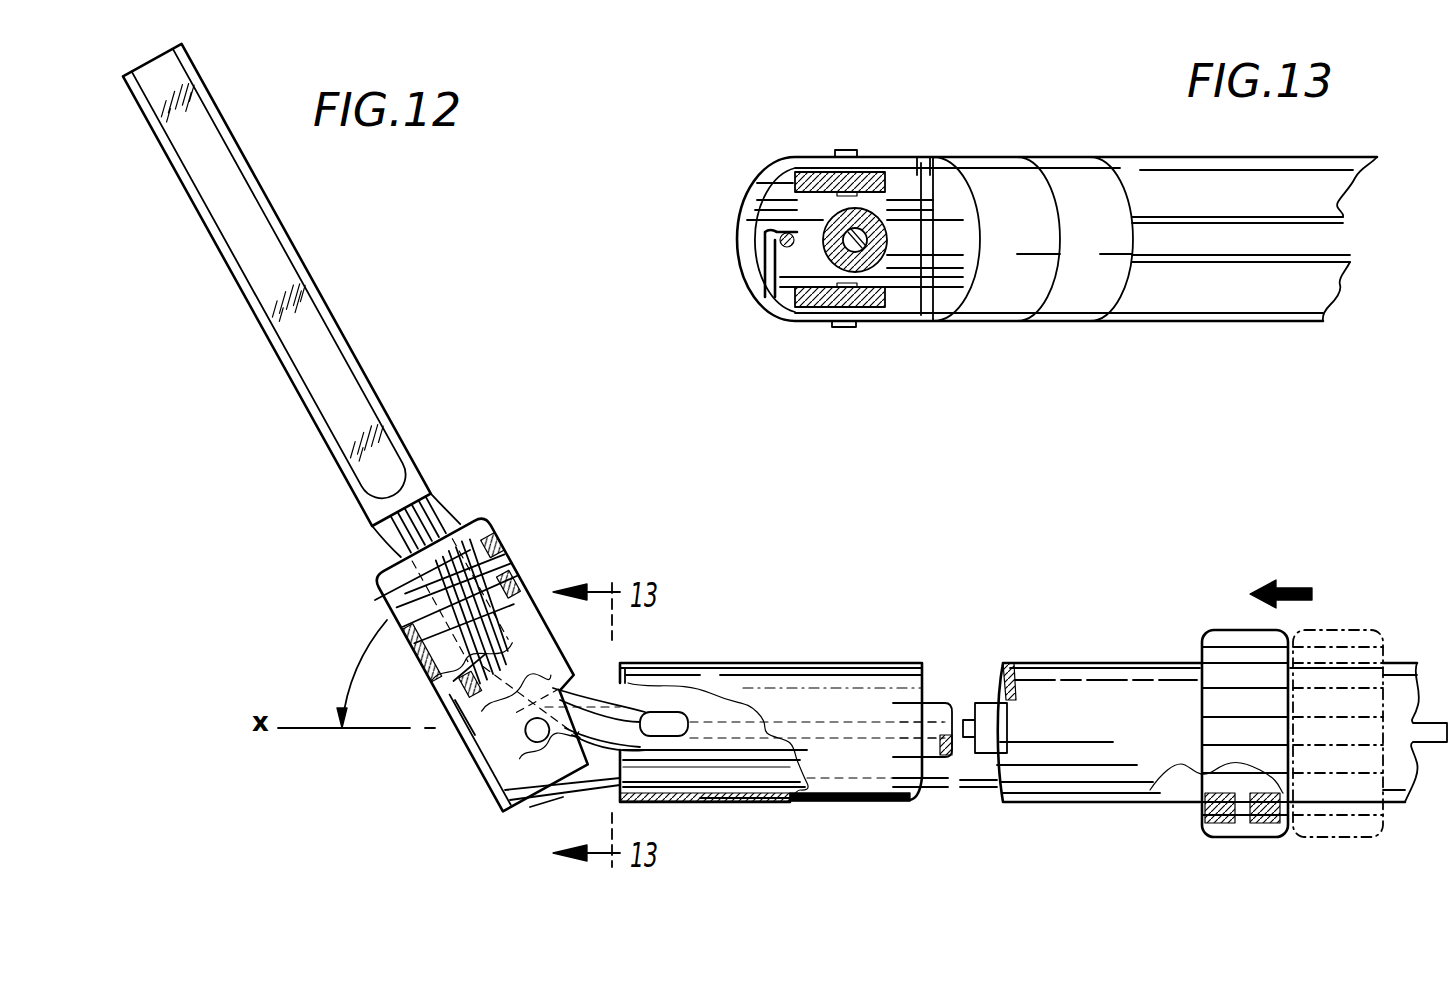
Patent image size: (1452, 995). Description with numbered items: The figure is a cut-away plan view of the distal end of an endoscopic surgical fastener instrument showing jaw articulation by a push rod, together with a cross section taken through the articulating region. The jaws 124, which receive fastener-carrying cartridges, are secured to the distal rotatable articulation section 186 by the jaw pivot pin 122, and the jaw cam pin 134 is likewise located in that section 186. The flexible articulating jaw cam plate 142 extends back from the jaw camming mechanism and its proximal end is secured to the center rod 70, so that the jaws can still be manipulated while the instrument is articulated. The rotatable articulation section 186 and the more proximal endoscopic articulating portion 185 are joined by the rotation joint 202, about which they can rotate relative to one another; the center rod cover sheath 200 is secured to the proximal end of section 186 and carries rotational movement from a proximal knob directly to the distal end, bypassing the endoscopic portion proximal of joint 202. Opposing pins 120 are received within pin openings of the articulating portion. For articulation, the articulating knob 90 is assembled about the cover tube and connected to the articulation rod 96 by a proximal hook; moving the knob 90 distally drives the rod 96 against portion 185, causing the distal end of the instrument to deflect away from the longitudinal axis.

In FIG. 12, the center rod 70 is at (740, 720).
In FIG. 12, the articulating knob 90 is at (1202, 638).
In FIG. 12, the articulation rod 96 is at (770, 790).
In FIG. 13, the articulation rod 96 is at (760, 240).
In FIG. 12, the pin 120 is at (480, 750).
In FIG. 13, the pin 120 is at (843, 148).
In FIG. 12, the jaw pivot pin 122 is at (483, 517).
In FIG. 12, the jaws 124 is at (247, 220).
In FIG. 13, the jaws 124 is at (1148, 183).
In FIG. 12, the jaw cam pin 134 is at (530, 580).
In FIG. 12, the articulating jaw cam plate 142 is at (633, 710).
In FIG. 13, the articulating jaw cam plate 142 is at (838, 255).
In FIG. 12, the endoscopic articulating portion 185 is at (490, 787).
In FIG. 13, the endoscopic articulating portion 185 is at (995, 292).
In FIG. 12, the rotatable articulation section 186 is at (373, 578).
In FIG. 13, the rotatable articulation section 186 is at (1075, 293).
In FIG. 12, the center rod cover sheath 200 is at (930, 705).
In FIG. 13, the center rod cover sheath 200 is at (900, 235).
In FIG. 12, the rotation joint 202 is at (440, 683).